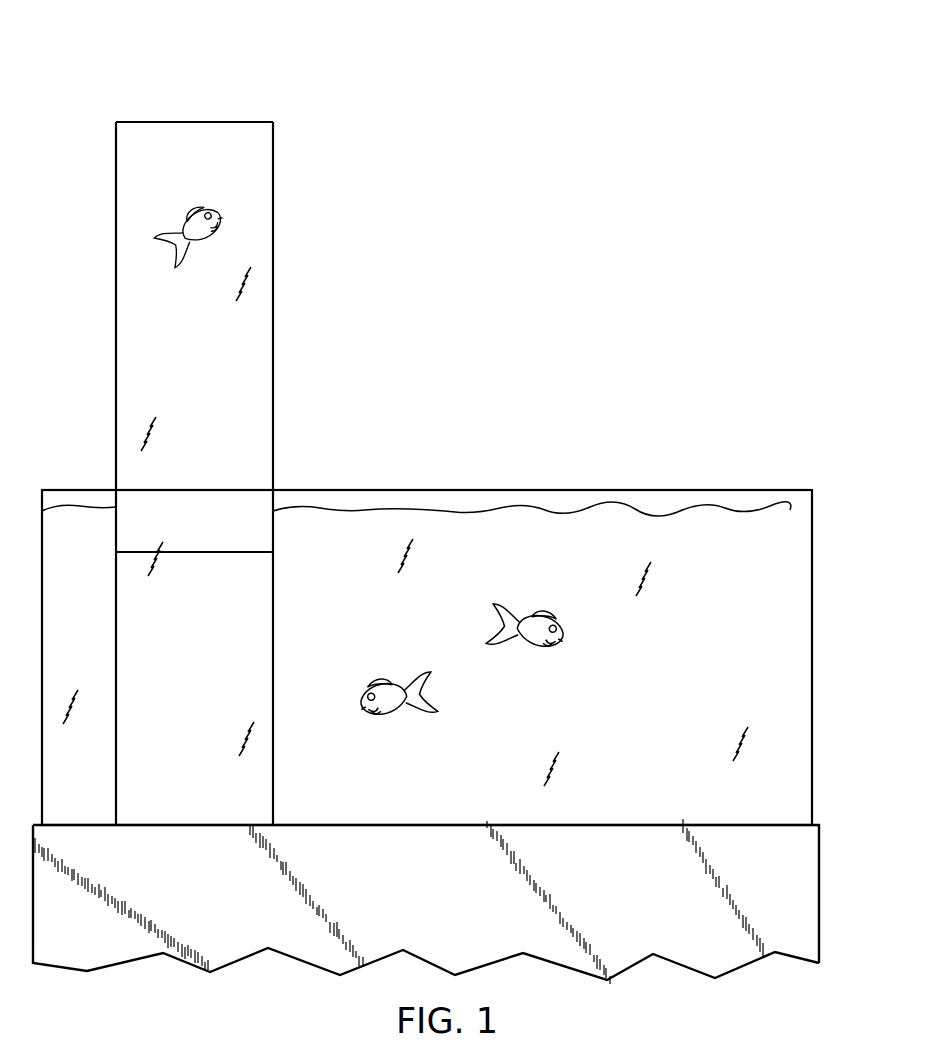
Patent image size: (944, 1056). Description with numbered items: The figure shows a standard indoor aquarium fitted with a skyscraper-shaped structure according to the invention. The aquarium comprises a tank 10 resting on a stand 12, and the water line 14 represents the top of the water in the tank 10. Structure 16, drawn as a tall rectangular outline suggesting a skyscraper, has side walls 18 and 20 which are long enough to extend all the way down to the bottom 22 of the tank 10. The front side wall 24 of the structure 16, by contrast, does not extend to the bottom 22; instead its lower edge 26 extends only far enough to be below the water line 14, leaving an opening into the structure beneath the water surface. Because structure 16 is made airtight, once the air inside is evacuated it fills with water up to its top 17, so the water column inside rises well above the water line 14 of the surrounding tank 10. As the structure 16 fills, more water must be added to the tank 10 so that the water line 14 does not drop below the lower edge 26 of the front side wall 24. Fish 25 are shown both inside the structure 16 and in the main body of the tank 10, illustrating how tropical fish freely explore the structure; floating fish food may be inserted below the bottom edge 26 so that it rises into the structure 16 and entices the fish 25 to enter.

The tank 10 is at (812, 707).
The stand 12 is at (819, 893).
The water line 14 is at (790, 510).
The structure 16 is at (227, 431).
The top 17 is at (178, 122).
The side wall 18 is at (273, 408).
The side wall 20 is at (116, 406).
The bottom 22 is at (432, 825).
The front side wall 24 is at (210, 378).
The fish 25 is at (210, 207).
The edge 26 is at (202, 553).